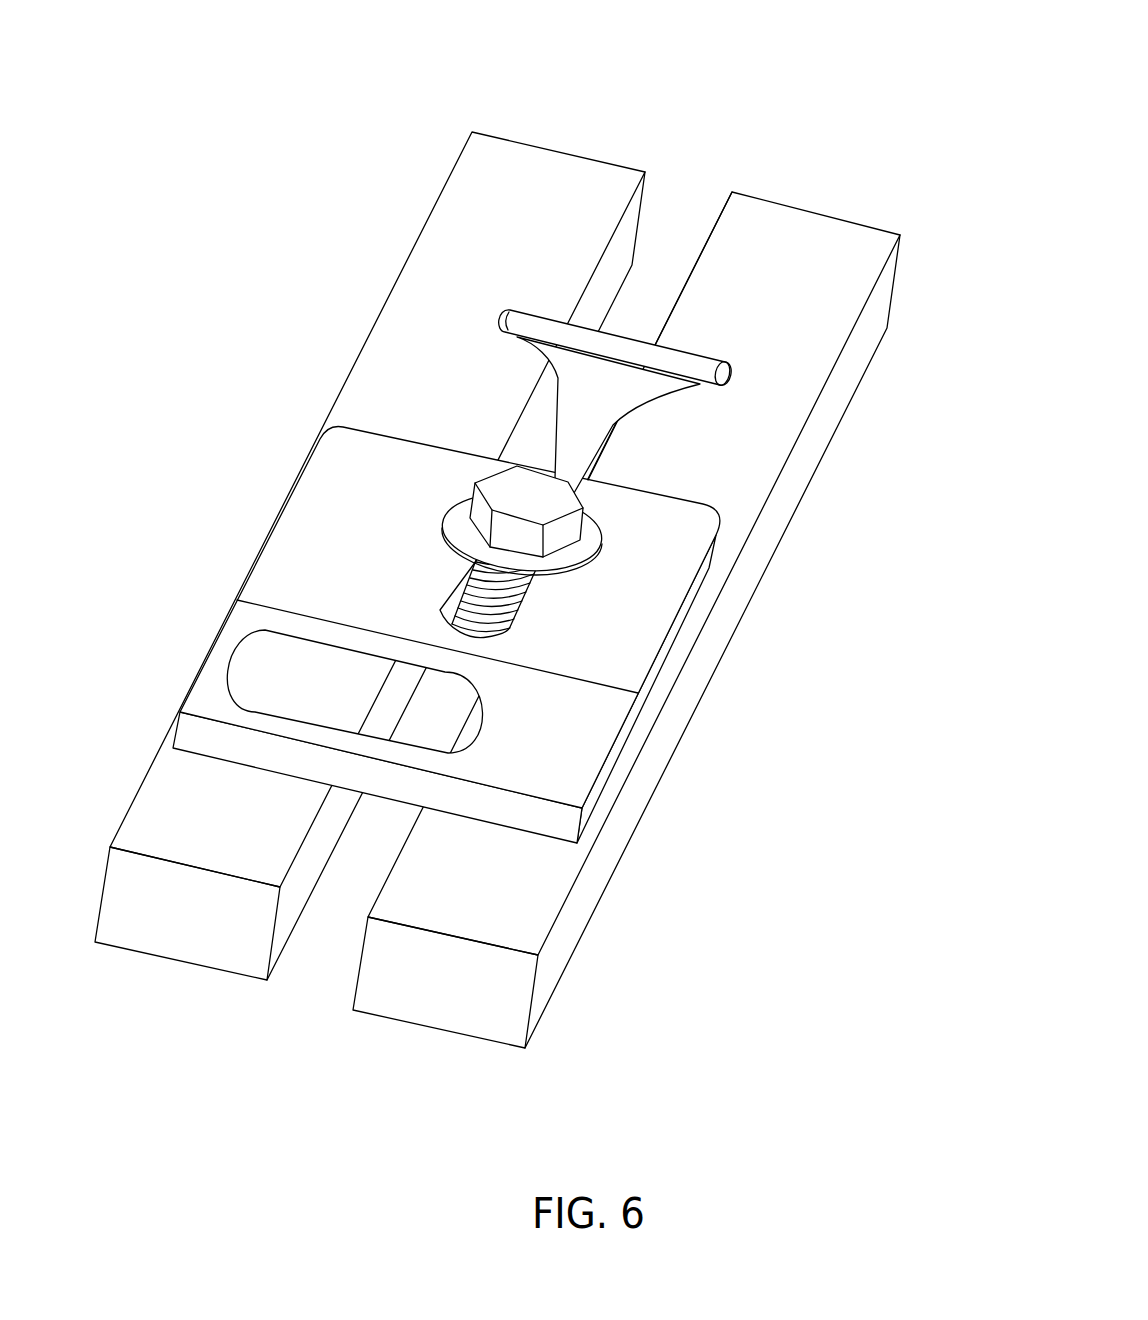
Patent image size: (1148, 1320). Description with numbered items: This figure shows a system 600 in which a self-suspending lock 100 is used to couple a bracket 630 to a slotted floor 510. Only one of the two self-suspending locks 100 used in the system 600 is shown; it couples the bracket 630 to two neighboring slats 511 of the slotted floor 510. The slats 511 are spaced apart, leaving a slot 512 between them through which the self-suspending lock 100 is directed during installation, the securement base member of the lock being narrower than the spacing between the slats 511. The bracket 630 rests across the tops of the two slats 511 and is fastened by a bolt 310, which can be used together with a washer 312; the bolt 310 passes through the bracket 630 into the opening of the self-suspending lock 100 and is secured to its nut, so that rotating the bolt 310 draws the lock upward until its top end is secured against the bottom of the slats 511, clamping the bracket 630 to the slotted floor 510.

The self-suspending lock 100 is at (543, 298).
The bolt 310 is at (461, 482).
The washer 312 is at (612, 562).
The slotted floor 510 is at (497, 528).
The slats 511 is at (565, 168).
The gap between rails 512 is at (713, 168).
The system 600 is at (497, 528).
The bracket 630 is at (596, 734).